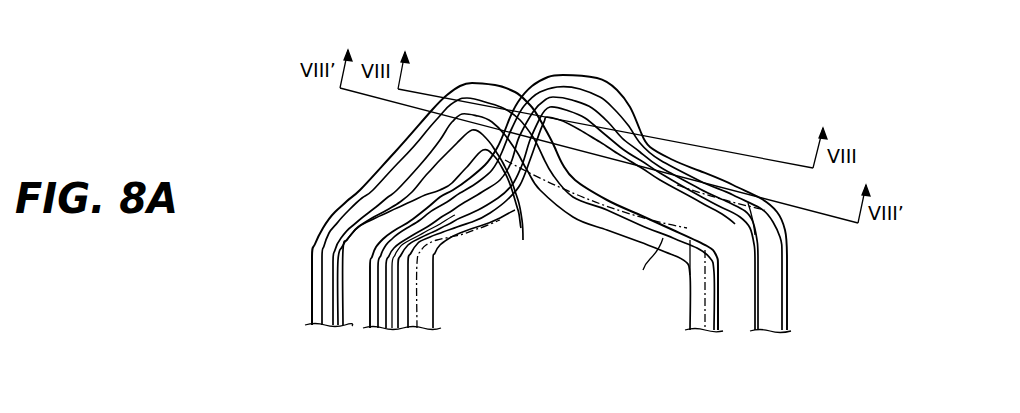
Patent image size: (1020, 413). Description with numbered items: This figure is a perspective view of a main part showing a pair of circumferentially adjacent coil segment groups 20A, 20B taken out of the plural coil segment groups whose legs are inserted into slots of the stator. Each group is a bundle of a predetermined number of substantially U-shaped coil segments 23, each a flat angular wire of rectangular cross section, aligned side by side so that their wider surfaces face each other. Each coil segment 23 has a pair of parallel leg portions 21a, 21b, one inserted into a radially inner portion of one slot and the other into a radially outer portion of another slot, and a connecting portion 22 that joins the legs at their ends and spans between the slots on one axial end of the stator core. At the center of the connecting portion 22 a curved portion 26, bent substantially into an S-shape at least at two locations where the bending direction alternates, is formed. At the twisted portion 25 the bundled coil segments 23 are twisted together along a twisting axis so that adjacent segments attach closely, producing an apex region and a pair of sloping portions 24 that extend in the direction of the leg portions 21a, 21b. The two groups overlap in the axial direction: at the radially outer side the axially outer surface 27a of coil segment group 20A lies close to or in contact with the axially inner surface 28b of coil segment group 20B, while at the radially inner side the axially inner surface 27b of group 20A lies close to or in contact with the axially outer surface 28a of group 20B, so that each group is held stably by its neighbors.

The coil segment group 20A is at (777, 292).
The coil segment group 20B is at (690, 297).
The leg portion 21a is at (770, 333).
The leg portion 21b is at (418, 318).
The connecting portion 22 is at (405, 133).
The coil segment 23 is at (403, 157).
The sloping portion 24 is at (445, 150).
The twisted portion 25 is at (617, 95).
The curved portion 26 is at (500, 80).
The axially outer surface 27a is at (497, 182).
The axially inner surface 27b is at (641, 303).
The axially outer surface 28a is at (600, 193).
The axially inner surface 28b is at (446, 190).